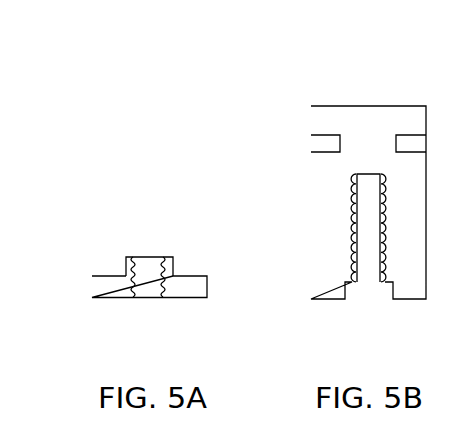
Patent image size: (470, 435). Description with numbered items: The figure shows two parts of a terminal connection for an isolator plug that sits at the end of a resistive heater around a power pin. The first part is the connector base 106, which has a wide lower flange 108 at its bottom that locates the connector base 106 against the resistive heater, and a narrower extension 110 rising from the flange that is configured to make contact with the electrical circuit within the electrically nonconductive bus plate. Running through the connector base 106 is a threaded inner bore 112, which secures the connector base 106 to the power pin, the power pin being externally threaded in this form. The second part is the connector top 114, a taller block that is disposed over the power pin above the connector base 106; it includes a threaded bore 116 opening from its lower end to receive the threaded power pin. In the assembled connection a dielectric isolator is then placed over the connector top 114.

In FIG. 5A, the connector base 106 is at (112, 253).
In FIG. 5A, the lower flange 108 is at (198, 290).
In FIG. 5A, the extension 110 is at (165, 258).
In FIG. 5A, the threaded inner bore 112 is at (132, 262).
In FIG. 5B, the connector top 114 is at (313, 88).
In FIG. 5B, the threaded bore 116 is at (355, 268).